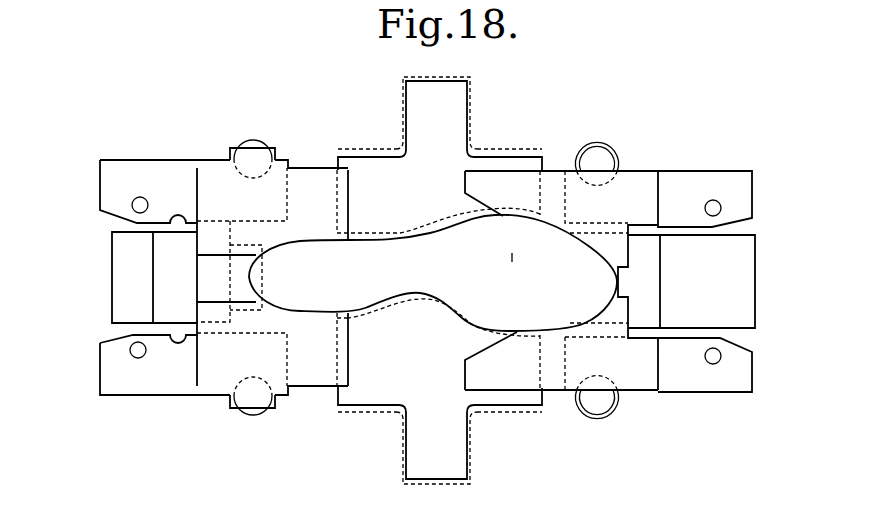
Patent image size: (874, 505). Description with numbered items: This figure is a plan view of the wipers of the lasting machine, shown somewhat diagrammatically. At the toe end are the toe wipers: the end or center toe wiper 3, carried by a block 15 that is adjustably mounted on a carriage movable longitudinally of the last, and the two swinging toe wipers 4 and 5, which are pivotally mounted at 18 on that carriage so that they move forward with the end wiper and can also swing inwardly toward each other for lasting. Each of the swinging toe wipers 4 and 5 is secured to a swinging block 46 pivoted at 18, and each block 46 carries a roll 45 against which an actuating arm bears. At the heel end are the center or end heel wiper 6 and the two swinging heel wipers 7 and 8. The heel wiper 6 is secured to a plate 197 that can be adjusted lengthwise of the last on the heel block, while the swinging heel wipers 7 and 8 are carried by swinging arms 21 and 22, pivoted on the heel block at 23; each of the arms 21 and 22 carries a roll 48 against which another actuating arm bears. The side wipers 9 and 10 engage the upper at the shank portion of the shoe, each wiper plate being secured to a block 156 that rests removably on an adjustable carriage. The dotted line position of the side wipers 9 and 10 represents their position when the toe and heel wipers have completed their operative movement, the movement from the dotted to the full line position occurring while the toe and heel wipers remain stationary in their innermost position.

The end toe wiper 3 is at (628, 275).
The swinging toe wiper 4 is at (558, 207).
The swinging toe wiper 5 is at (549, 343).
The center heel wiper 6 is at (238, 283).
The swinging heel wiper 7 is at (297, 213).
The swinging heel wiper 8 is at (292, 327).
The side wiper 9 is at (432, 210).
The side wiper 10 is at (432, 316).
The block 15 is at (756, 274).
The pivot 18 is at (716, 202).
The swinging arm 21 is at (176, 172).
The swinging arm 22 is at (182, 382).
The pivot 23 is at (141, 197).
The roll 45 is at (594, 143).
The swinging block 46 is at (678, 179).
The roll 48 is at (253, 141).
The block 156 is at (406, 108).
The plate 197 is at (114, 265).